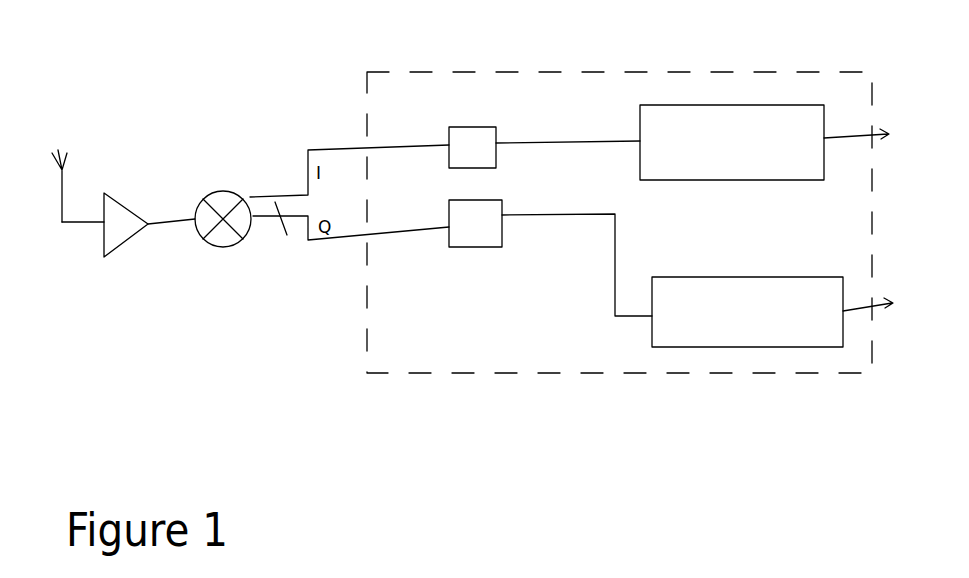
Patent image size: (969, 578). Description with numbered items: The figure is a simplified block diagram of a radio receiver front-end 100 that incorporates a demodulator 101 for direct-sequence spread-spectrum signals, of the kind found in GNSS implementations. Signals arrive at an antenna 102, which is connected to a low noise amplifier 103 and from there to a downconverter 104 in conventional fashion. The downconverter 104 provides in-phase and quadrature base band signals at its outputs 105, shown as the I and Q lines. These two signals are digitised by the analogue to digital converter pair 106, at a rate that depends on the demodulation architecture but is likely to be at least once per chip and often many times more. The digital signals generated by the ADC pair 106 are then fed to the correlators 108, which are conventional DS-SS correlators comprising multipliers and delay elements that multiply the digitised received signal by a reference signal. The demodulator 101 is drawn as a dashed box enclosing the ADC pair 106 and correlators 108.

The radio receiver front-end 100 is at (184, 348).
The demodulator 101 is at (462, 378).
The antenna 102 is at (76, 152).
The low noise amplifier 103 is at (126, 195).
The downconverter 104 is at (220, 172).
The outputs 105 is at (260, 223).
The analogue to digital converter pair 106 is at (500, 190).
The correlators 108 is at (720, 188).